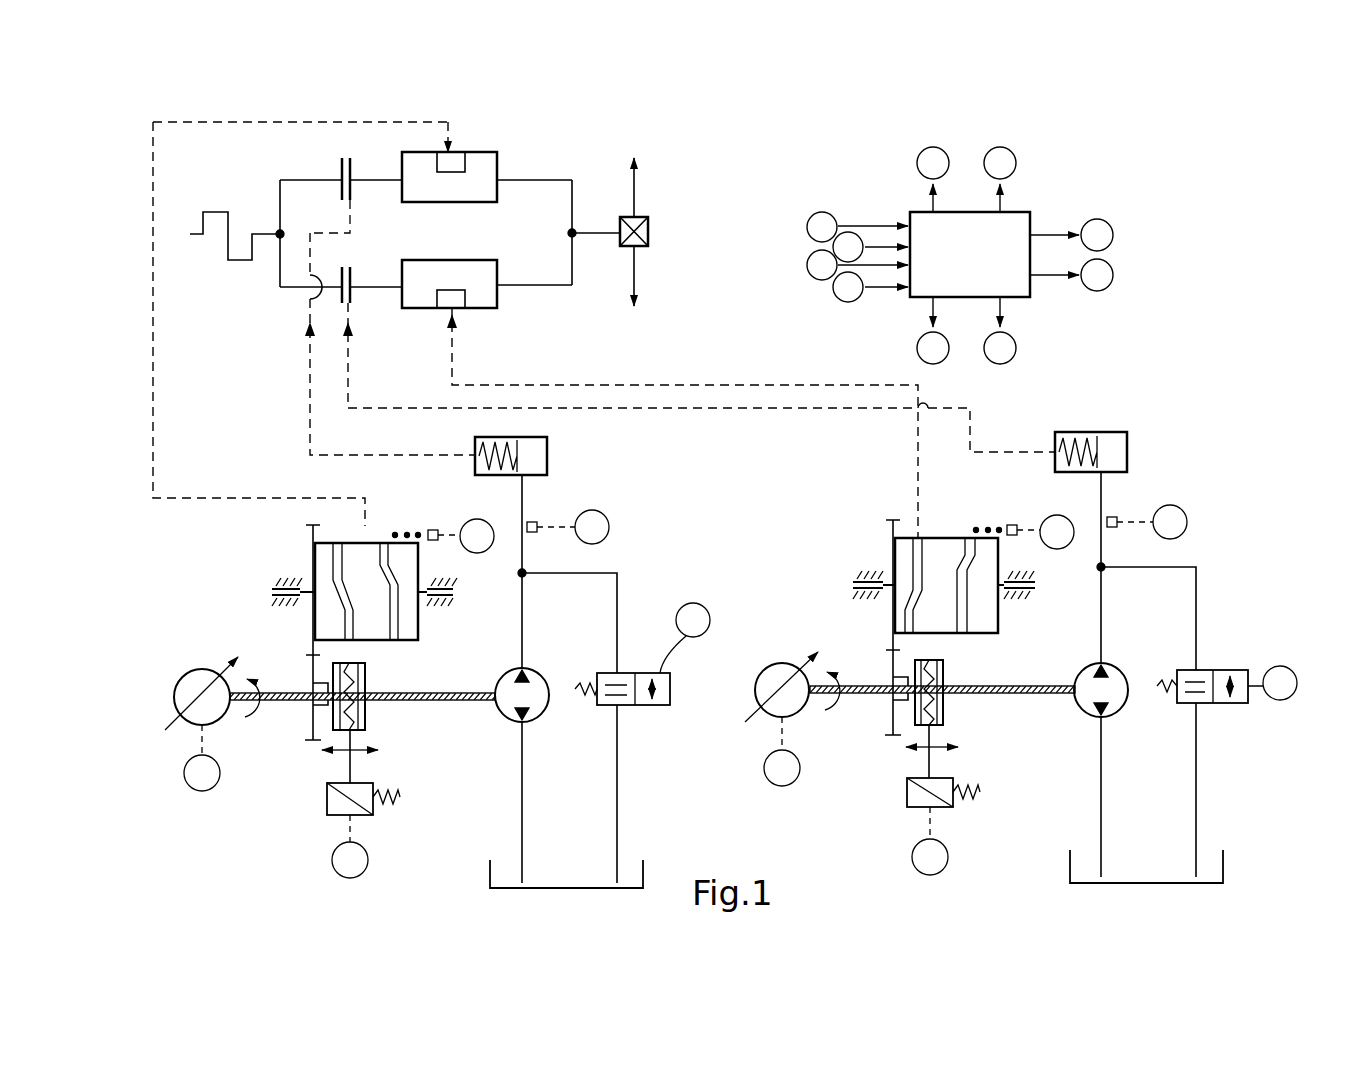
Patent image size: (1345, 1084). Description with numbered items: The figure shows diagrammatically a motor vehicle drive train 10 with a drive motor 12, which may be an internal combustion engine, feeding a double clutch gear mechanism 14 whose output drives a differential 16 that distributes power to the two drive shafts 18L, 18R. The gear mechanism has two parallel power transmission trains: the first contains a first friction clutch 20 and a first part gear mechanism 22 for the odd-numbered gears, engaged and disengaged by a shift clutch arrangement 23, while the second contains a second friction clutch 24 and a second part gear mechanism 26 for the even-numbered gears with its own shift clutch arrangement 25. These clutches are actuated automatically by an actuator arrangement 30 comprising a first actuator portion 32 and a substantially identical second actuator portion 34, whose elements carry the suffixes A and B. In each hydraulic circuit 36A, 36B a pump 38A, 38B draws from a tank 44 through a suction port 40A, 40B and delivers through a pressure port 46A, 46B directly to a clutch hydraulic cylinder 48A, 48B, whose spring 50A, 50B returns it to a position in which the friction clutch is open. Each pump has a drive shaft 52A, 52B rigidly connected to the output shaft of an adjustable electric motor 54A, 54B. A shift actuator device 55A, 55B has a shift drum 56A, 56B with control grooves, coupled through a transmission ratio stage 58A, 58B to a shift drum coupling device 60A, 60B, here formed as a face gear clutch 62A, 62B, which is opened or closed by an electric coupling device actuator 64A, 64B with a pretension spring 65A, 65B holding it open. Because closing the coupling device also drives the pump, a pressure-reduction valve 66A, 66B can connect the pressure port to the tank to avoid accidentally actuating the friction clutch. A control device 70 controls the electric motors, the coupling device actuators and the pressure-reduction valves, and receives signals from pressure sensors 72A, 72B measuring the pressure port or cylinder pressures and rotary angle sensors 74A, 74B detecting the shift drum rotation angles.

The motor vehicle drive train 10 is at (1155, 240).
The drive motor 12 is at (250, 262).
The double clutch gear mechanism 14 is at (545, 158).
The differential 16 is at (648, 226).
The drive shaft 18L is at (637, 190).
The drive shaft 18R is at (637, 273).
The first friction clutch 20 is at (342, 172).
The first part gear mechanism 22 is at (490, 152).
The shift clutch arrangement 23 is at (455, 165).
The second friction clutch 24 is at (355, 282).
The shift clutch arrangement 25 is at (452, 298).
The second part gear mechanism 26 is at (497, 298).
The actuator arrangement 30 is at (1192, 436).
The first actuator portion 32 is at (640, 530).
The second actuator portion 34 is at (1230, 524).
The hydraulic circuit 36A is at (632, 498).
The hydraulic circuit 36B is at (1160, 383).
The pump 38A is at (502, 716).
The pump 38B is at (1082, 716).
The suction port 40A is at (520, 804).
The suction port 40B is at (1103, 790).
The tank 44 is at (538, 890).
The pressure port 46A is at (522, 603).
The pressure port 46B is at (1101, 613).
The clutch hydraulic cylinder 48A is at (548, 456).
The clutch hydraulic cylinder 48B is at (1135, 455).
The spring 50A is at (505, 468).
The spring 50B is at (1062, 432).
The drive shaft 52A is at (428, 694).
The drive shaft 52B is at (1010, 694).
The electric motor 54A is at (186, 670).
The electric motor 54B is at (800, 716).
The shift actuator device 55A is at (216, 532).
The shift actuator device 55B is at (903, 508).
The shift drum 56A is at (323, 555).
The shift drum 56B is at (900, 555).
The transmission ratio stage 58A is at (313, 672).
The transmission ratio stage 58B is at (893, 665).
The shift drum coupling device 60A is at (268, 810).
The shift drum coupling device 60B is at (885, 792).
The face gear clutch 62A is at (372, 718).
The face gear clutch 62B is at (947, 661).
The electric coupling device actuator 64A is at (316, 822).
The electric coupling device actuator 64B is at (996, 904).
The pretension spring 65A is at (388, 805).
The pretension spring 65B is at (968, 800).
The pressure-reduction valve 66A is at (640, 706).
The pressure-reduction valve 66B is at (1217, 704).
The control device 70 is at (1015, 205).
The pressure sensor 72A is at (536, 522).
The pressure sensor 72B is at (1112, 530).
The rotary angle sensor 74A is at (433, 530).
The rotary angle sensor 74B is at (1012, 525).